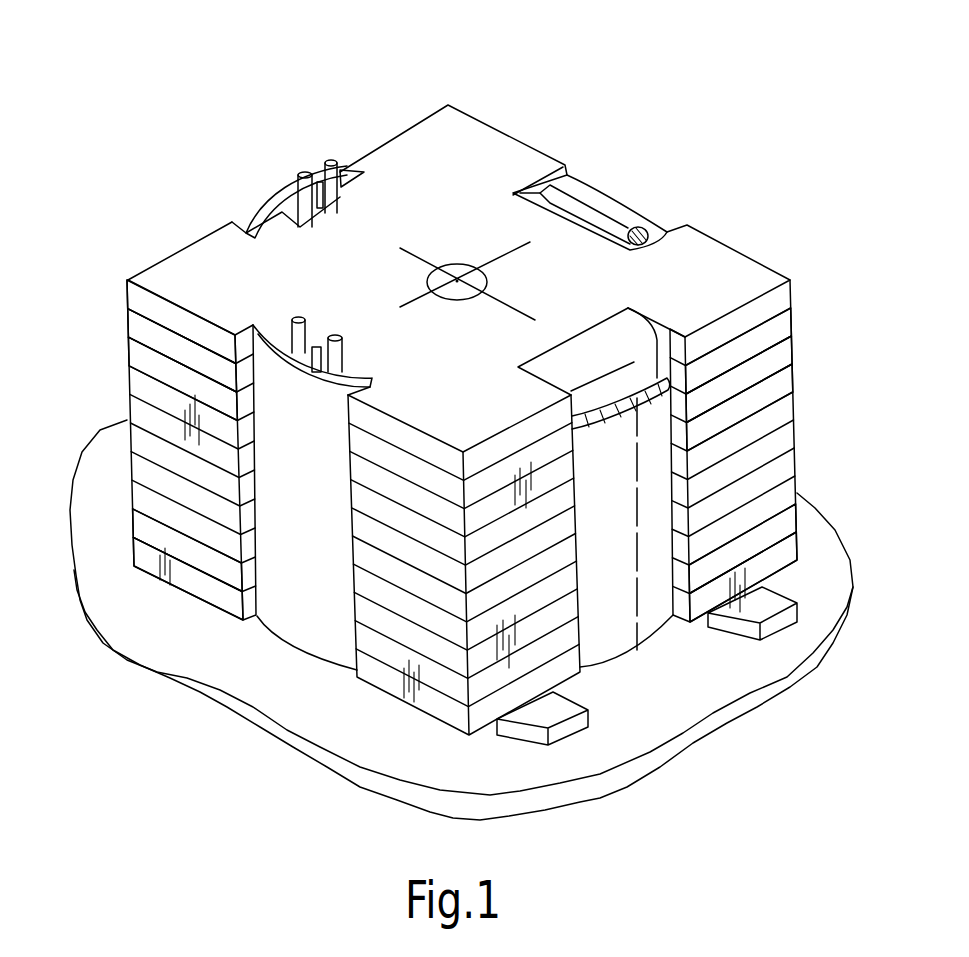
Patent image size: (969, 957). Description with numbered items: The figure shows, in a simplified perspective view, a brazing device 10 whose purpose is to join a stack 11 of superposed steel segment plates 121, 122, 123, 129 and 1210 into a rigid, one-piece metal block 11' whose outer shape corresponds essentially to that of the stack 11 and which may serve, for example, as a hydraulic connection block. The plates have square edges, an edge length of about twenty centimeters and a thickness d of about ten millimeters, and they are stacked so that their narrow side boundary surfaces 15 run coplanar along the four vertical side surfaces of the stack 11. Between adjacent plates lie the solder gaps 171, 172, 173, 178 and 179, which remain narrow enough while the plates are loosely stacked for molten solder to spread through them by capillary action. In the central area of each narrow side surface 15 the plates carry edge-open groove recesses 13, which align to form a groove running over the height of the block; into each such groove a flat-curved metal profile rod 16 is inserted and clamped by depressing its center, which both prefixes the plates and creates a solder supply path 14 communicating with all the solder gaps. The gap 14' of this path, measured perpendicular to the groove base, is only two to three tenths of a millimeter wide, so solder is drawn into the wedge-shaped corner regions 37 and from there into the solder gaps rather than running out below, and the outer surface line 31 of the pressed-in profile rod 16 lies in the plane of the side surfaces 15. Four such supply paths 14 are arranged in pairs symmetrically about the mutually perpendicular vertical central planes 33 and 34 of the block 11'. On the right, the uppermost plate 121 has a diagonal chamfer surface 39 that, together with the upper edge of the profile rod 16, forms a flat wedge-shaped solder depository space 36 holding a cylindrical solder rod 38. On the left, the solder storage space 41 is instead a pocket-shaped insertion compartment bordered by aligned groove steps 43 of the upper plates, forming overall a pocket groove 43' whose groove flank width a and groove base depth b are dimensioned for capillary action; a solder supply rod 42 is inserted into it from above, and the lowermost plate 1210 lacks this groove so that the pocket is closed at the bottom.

The device for brazing 10 is at (458, 416).
The stack of segment plates 11 is at (427, 278).
The metal block 11' is at (190, 262).
The uppermost segment plate 121 is at (133, 295).
The second segment plate 122 is at (137, 327).
The third segment plate 123 is at (140, 353).
The ninth segment plate 129 is at (138, 520).
The lowermost segment plate 1210 is at (140, 553).
The edge-open groove recess 13 is at (366, 187).
The solder supply path 14 is at (298, 257).
The vertical gap of the solder supply path 14' is at (621, 343).
The narrow side boundary surface 15 is at (505, 497).
The metal profile rod 16 is at (256, 212).
The first solder gap 171 is at (780, 318).
The second solder gap 172 is at (781, 343).
The third solder gap 173 is at (782, 375).
The eighth solder gap 178 is at (780, 520).
The ninth solder gap 179 is at (853, 585).
The outer surface line of the profile bar 31 is at (637, 550).
The vertical central plane 33 is at (527, 307).
The vertical central plane 34 is at (528, 241).
The solder depository space 36 is at (588, 178).
The corner edge near region 37 is at (369, 377).
The solder material piece 38 is at (608, 220).
The diagonal chamfer surface 39 is at (608, 337).
The solder storage space 41 is at (328, 160).
The solder material supply rod 42 is at (303, 172).
The groove step 43 is at (347, 318).
The pocket groove 43' is at (274, 129).
The groove flank width a is at (392, 218).
The groove base depth b is at (212, 232).
The plate thickness d is at (730, 285).